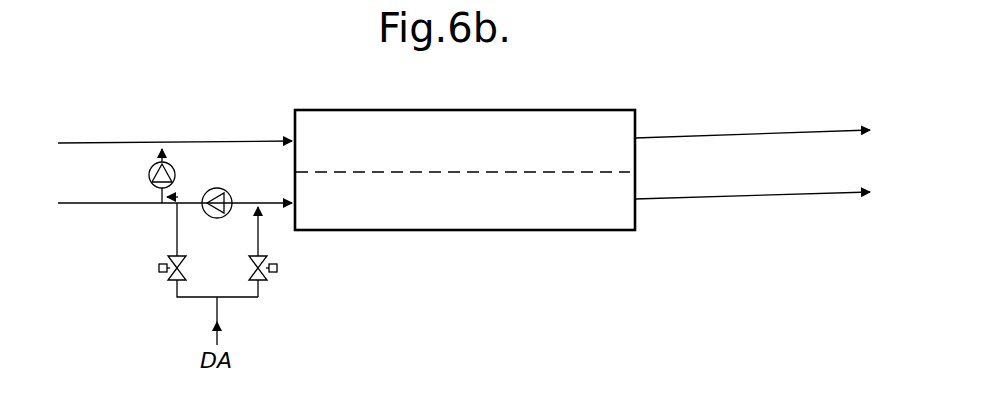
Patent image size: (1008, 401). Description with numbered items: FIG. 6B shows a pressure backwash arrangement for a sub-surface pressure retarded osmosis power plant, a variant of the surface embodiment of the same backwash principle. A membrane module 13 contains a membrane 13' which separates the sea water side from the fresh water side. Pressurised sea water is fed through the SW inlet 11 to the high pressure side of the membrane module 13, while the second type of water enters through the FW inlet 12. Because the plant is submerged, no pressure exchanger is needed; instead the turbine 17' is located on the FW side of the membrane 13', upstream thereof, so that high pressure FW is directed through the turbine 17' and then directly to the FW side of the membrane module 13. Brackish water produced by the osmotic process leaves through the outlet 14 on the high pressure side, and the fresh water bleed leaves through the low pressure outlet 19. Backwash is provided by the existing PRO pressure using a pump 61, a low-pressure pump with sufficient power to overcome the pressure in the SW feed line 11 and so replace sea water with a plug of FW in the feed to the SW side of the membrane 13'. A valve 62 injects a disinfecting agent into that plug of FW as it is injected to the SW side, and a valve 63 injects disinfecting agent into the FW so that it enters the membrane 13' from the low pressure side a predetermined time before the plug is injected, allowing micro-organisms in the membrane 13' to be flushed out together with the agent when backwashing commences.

The SW inlet 11 is at (180, 141).
The FW inlet 12 is at (114, 205).
The membrane module 13 is at (465, 155).
The membrane 13' is at (463, 224).
The outlet on the high pressure side 14 is at (660, 138).
The turbine 17' is at (218, 235).
The low pressure outlet 19 is at (665, 200).
The pump 61 is at (148, 175).
The valve 62 is at (168, 280).
The valve 63 is at (268, 281).